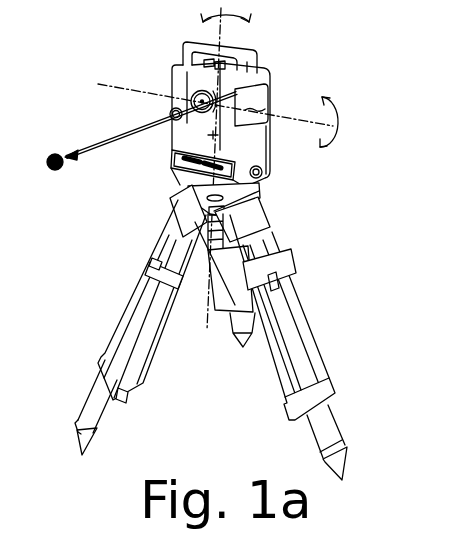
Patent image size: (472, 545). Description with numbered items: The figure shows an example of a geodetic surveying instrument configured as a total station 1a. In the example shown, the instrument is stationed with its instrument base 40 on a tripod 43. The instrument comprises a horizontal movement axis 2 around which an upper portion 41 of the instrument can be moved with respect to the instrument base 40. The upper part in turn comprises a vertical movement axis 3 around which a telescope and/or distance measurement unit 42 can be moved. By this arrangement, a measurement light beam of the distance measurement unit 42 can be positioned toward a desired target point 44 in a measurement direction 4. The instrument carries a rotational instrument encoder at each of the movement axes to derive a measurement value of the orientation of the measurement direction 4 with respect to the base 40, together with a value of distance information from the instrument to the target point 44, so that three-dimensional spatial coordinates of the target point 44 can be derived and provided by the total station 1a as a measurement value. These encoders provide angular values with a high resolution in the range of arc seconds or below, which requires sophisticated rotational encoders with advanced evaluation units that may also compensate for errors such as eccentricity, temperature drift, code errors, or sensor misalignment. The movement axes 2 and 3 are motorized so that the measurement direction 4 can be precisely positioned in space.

The total station 1a is at (287, 73).
The horizontal movement axis 2 is at (220, 33).
The vertical movement axis 3 is at (138, 88).
The measurement direction 4 is at (107, 140).
The target point 44 is at (58, 171).
The telescope and/or distance measurement unit 42 is at (207, 83).
The upper portion 41 is at (257, 151).
The instrument base 40 is at (270, 200).
The tripod 43 is at (288, 287).